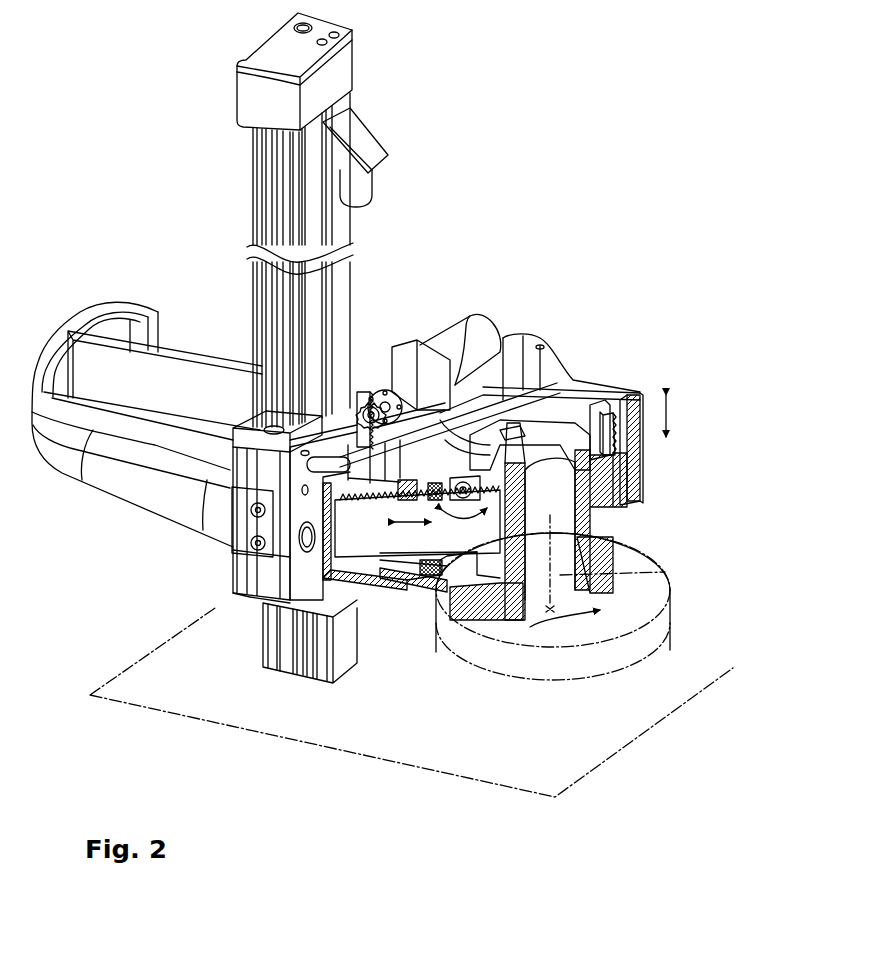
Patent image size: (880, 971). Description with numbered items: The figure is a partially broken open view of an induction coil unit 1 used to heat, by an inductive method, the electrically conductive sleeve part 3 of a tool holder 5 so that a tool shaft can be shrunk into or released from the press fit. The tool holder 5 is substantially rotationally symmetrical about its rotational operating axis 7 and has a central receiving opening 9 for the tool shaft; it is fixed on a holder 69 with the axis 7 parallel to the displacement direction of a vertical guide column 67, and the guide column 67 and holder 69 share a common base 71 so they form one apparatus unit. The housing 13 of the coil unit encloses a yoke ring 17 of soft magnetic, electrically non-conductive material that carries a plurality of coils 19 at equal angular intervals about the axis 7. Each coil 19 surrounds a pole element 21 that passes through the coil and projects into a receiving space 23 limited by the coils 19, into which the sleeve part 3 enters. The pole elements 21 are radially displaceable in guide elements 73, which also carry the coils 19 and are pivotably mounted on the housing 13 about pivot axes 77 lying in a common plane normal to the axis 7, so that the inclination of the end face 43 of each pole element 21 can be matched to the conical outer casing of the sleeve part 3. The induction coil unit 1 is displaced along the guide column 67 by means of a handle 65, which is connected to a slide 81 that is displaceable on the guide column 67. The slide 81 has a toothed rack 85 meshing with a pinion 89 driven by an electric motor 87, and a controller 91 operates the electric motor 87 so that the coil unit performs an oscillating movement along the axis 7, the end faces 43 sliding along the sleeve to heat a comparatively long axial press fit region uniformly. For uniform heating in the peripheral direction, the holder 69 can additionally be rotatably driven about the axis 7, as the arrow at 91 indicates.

The induction coil unit 1 is at (626, 258).
The sleeve part 3 is at (520, 458).
The tool holder 5 is at (610, 560).
The rotational operating axis 7 is at (665, 572).
The receiving opening 9 is at (566, 470).
The housing 13 is at (553, 367).
The yoke ring 17 is at (612, 395).
The coils 19 is at (432, 590).
The pole element 21 is at (378, 578).
The receiving space 23 is at (606, 520).
The end face 43 is at (508, 518).
The handle 65 is at (127, 483).
The guide column 67 is at (345, 293).
The holder 69 is at (672, 632).
The common base 71 is at (395, 767).
The guide elements 73 is at (487, 458).
The pivot axes 77 is at (460, 512).
The slide 81 is at (238, 600).
The toothed rack 85 is at (355, 413).
The electric motor 87 is at (460, 330).
The pinion 89 is at (370, 402).
The controller 91 is at (472, 312).